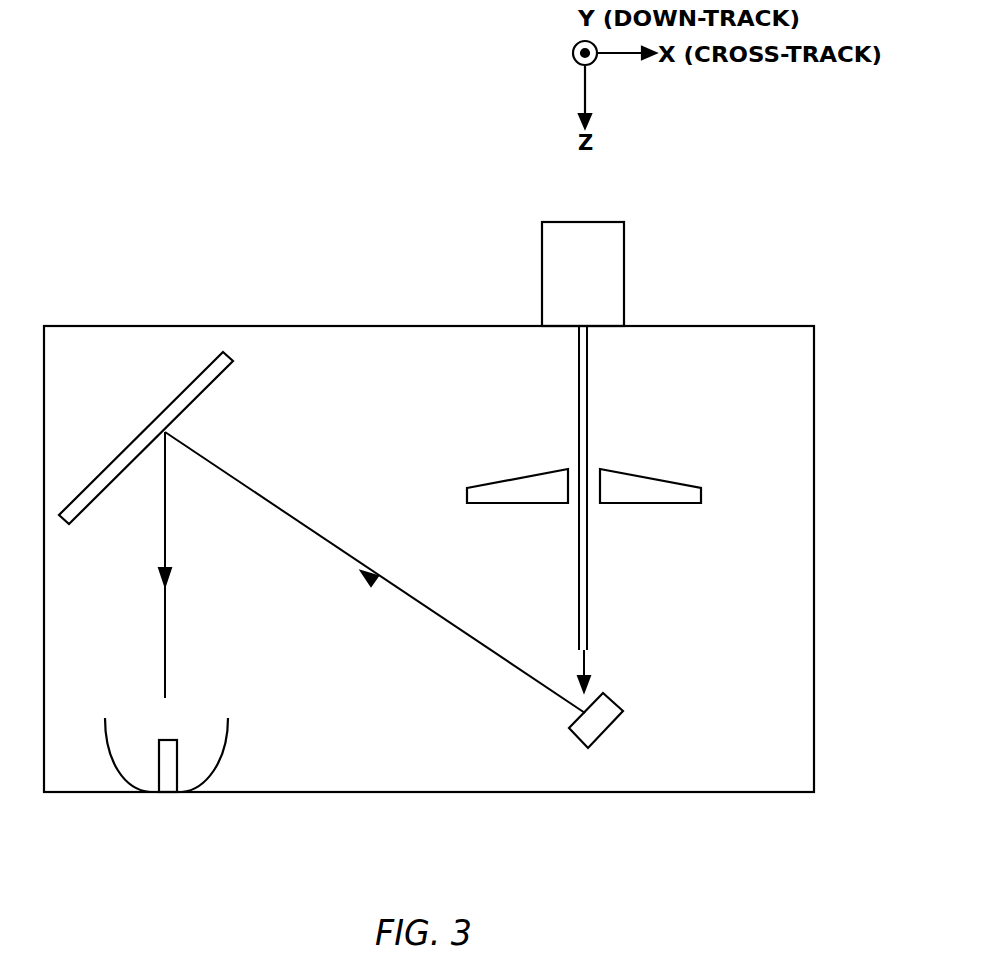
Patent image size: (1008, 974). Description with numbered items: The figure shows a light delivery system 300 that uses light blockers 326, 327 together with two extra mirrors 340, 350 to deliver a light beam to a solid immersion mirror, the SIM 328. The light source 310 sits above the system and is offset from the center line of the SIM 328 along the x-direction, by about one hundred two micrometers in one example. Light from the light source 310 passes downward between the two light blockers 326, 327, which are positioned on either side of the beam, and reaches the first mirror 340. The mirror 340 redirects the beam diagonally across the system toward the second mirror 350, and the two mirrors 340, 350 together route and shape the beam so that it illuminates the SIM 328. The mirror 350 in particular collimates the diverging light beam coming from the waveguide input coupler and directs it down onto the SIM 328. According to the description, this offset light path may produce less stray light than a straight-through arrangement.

The light delivery system 300 is at (246, 222).
The light source 310 is at (601, 286).
The light blocker 326 is at (465, 493).
The light blocker 327 is at (701, 493).
The SIM 328 is at (217, 767).
The mirror 340 is at (618, 703).
The mirror 350 is at (206, 390).